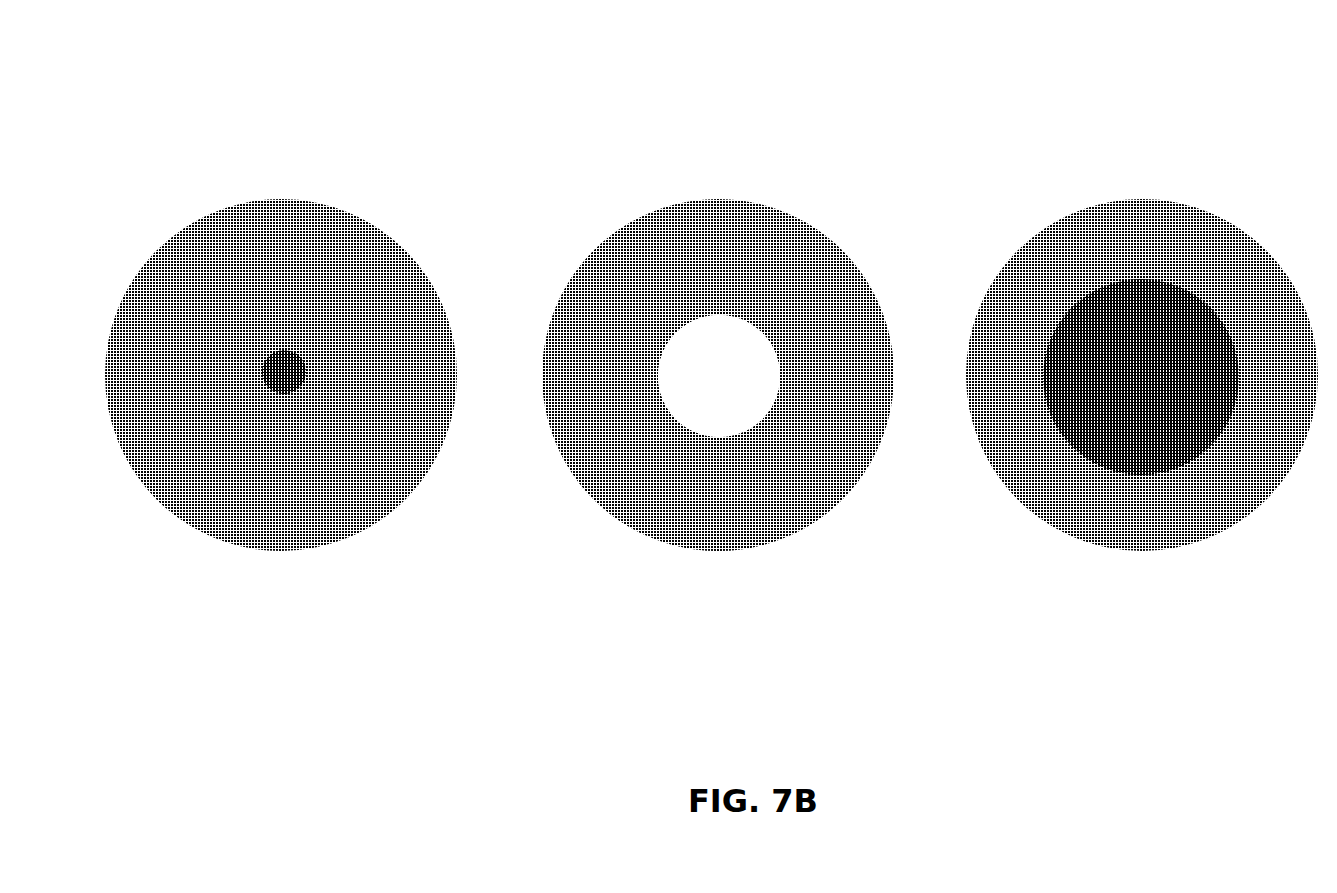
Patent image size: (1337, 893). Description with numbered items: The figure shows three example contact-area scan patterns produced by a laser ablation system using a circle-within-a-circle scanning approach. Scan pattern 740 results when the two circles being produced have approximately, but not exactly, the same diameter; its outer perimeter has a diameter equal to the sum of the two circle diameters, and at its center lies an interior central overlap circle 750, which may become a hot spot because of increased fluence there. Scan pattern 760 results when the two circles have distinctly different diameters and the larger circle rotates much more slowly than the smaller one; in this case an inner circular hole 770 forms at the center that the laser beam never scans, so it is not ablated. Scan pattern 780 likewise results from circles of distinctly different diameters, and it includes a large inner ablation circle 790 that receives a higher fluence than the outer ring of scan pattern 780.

The scan pattern 740 is at (281, 345).
The scan pattern 760 is at (718, 340).
The scan pattern 780 is at (1142, 332).
The interior central overlap circle 750 is at (285, 388).
The inner circular hole 770 is at (731, 403).
The large inner ablation circle 790 is at (1136, 440).